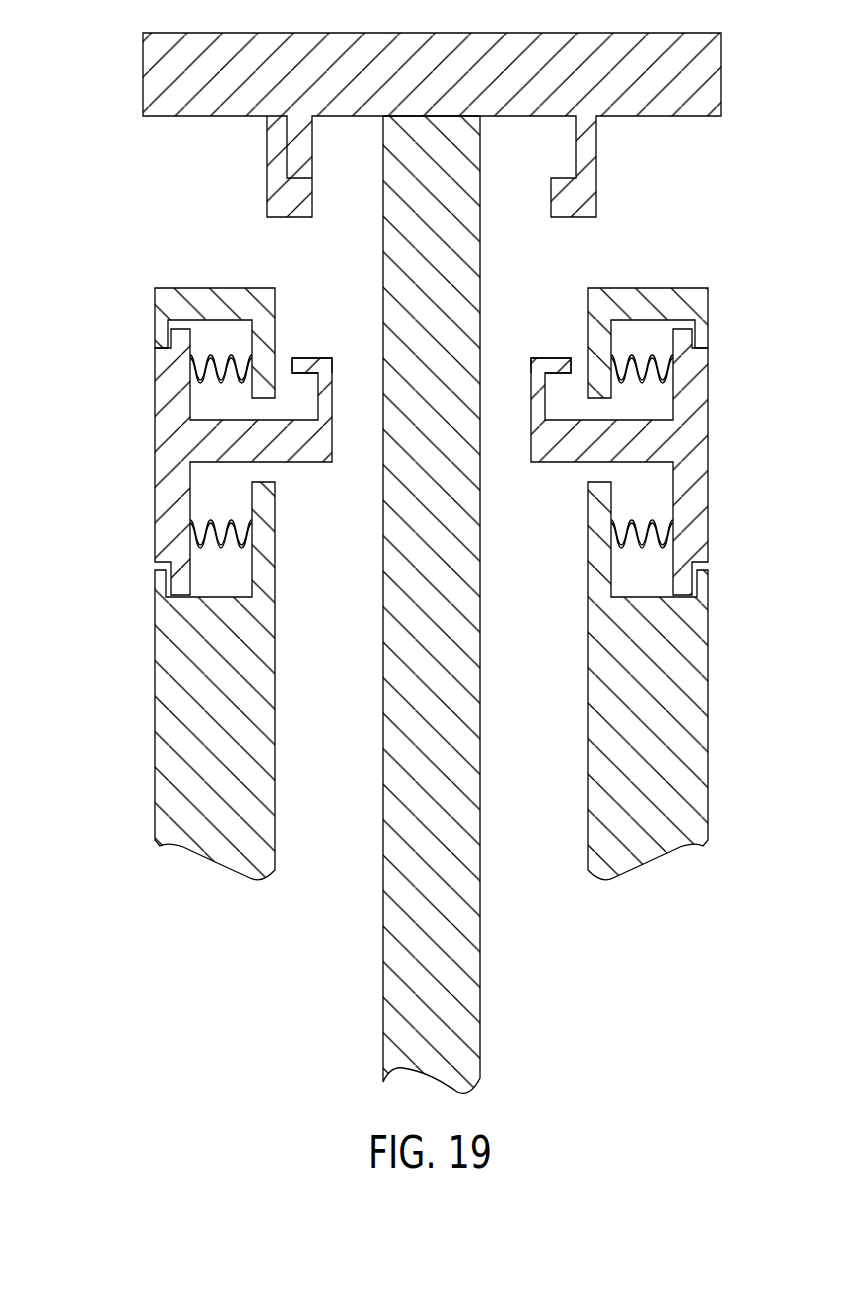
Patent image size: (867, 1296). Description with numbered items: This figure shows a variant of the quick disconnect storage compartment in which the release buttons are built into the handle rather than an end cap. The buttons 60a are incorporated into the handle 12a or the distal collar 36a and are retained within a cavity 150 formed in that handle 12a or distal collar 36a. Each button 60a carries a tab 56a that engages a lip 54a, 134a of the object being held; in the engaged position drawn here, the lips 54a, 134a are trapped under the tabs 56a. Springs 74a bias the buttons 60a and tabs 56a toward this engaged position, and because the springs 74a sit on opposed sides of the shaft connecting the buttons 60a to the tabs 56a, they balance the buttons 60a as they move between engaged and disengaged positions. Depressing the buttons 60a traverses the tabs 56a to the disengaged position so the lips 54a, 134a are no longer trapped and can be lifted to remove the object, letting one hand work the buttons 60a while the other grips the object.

The lip 54a is at (432, 125).
The lip 134a is at (295, 198).
The cavity 150 is at (232, 335).
The spring 74a is at (212, 358).
The tab 56a is at (303, 364).
The button 60a is at (401, 447).
The handle 12a is at (385, 681).
The distal collar 36a is at (163, 752).